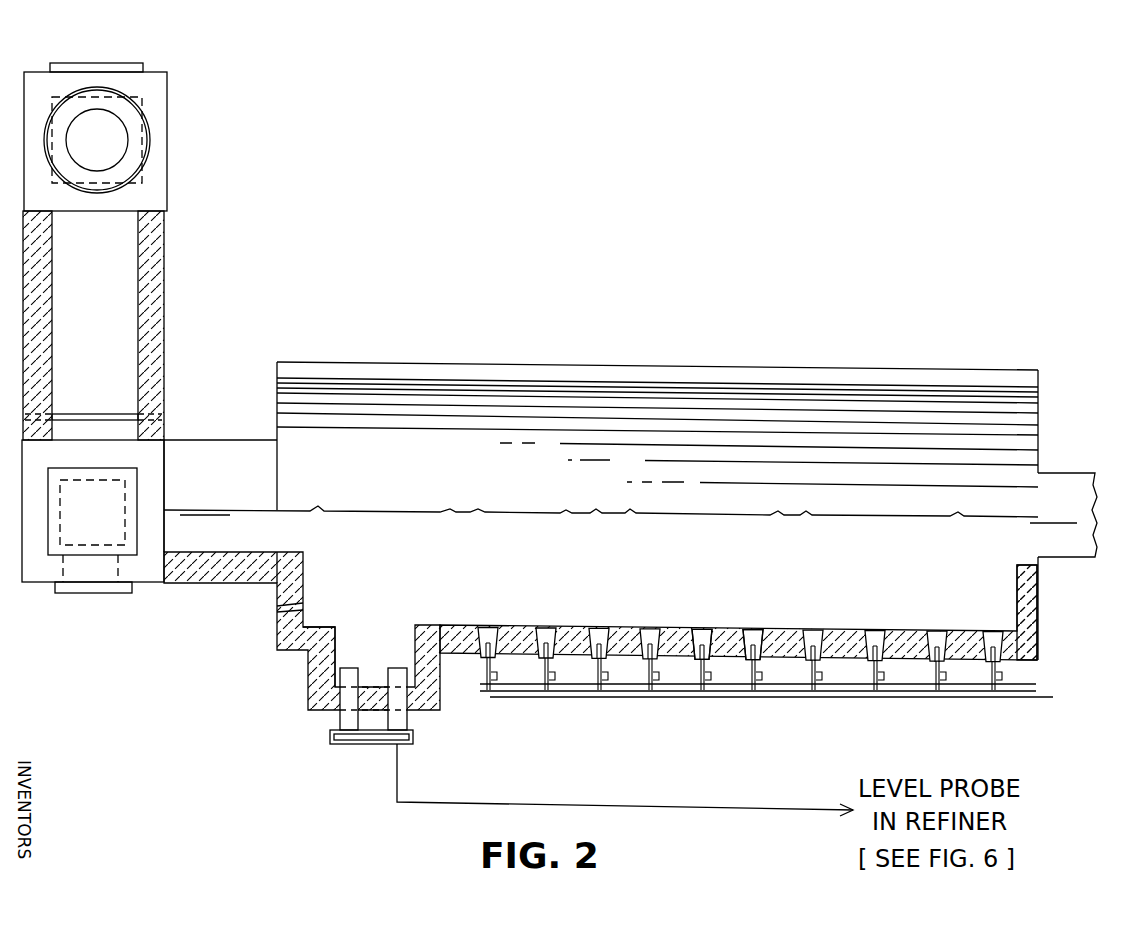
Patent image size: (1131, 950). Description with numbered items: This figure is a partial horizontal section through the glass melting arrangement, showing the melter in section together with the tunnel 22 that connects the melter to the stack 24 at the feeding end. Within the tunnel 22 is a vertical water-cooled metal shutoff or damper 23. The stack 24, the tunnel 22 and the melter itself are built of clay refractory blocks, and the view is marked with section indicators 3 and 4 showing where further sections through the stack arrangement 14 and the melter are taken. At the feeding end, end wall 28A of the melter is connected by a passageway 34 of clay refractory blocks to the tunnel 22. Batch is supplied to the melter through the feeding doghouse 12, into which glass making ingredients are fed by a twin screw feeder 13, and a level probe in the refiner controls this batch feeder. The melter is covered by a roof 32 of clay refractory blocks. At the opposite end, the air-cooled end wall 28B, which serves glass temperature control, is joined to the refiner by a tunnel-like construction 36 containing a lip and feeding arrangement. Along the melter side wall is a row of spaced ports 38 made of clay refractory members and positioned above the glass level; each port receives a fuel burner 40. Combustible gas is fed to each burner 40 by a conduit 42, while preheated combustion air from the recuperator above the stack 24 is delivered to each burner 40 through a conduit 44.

The section line 3- 3 is at (94, 331).
The section line 4- 4 is at (198, 530).
The feeding doghouse 12 is at (302, 678).
The twin screw feeder 13 is at (404, 726).
The stack arrangement 14 is at (174, 346).
The tunnel 22 is at (160, 257).
The shutoff damper 23 is at (106, 412).
The stack 24 is at (130, 143).
The end wall 28A is at (282, 600).
The end wall 28B is at (1038, 604).
The roof 32 is at (586, 502).
The passageway 34 is at (186, 586).
The tunnel-like construction 36 is at (1061, 470).
The ports 38 is at (745, 642).
The fuel burner 40 is at (1000, 667).
The conduit 42 is at (885, 699).
The conduit 44 is at (783, 691).